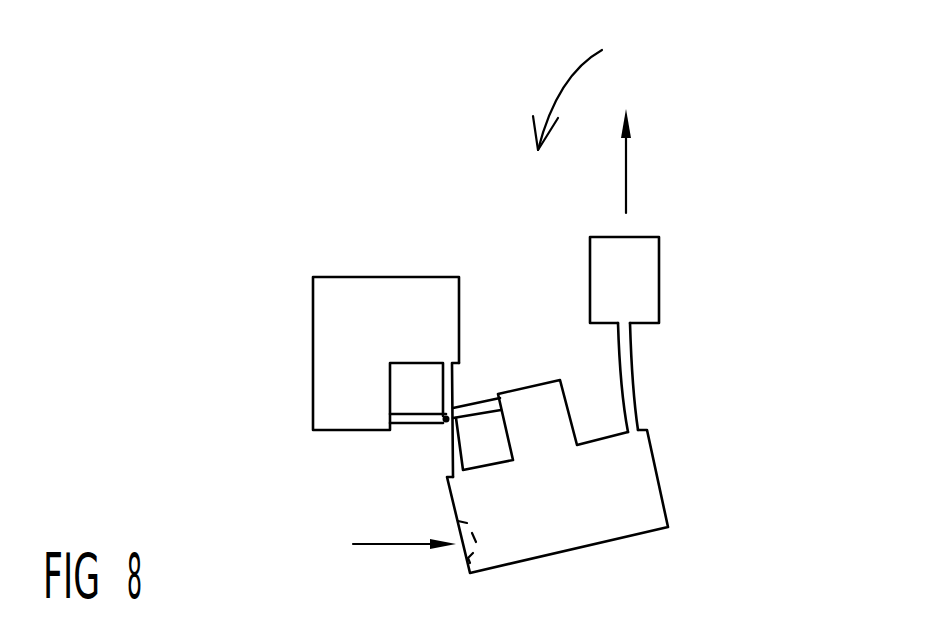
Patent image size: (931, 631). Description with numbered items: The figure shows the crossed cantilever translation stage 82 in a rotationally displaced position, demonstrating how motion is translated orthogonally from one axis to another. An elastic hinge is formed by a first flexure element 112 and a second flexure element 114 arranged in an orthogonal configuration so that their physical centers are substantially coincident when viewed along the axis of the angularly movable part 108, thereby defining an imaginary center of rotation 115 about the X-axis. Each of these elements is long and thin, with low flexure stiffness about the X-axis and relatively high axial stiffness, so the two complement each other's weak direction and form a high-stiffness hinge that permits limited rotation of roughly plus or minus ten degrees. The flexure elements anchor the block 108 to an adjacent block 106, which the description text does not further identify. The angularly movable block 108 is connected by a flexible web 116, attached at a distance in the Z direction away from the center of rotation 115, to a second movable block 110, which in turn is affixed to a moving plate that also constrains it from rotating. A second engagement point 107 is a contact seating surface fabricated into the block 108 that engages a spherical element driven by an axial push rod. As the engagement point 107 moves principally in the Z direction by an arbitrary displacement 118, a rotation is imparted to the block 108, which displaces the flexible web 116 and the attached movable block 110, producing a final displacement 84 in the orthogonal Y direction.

The crossed cantilever translation stage 82 is at (585, 78).
The displacement in the orthogonal Y direction 84 is at (626, 163).
The reservoir chamber 106 is at (357, 307).
The engagement point 107 is at (477, 542).
The angularly movable part 108 is at (607, 488).
The second movable block 110 is at (638, 265).
The first flexure element 112 is at (447, 387).
The second flexure element 114 is at (417, 418).
The center of rotation 115 is at (446, 421).
The flexible web 116 is at (627, 373).
The arbitrary displacement 118 is at (400, 545).